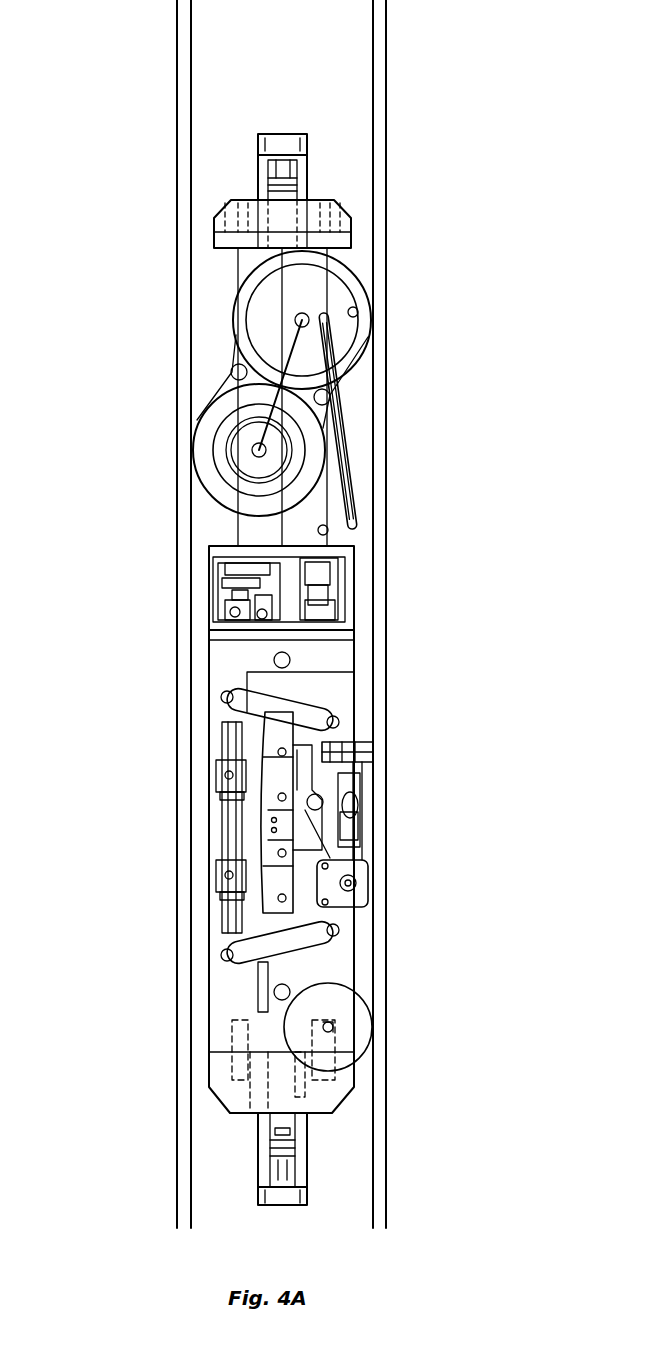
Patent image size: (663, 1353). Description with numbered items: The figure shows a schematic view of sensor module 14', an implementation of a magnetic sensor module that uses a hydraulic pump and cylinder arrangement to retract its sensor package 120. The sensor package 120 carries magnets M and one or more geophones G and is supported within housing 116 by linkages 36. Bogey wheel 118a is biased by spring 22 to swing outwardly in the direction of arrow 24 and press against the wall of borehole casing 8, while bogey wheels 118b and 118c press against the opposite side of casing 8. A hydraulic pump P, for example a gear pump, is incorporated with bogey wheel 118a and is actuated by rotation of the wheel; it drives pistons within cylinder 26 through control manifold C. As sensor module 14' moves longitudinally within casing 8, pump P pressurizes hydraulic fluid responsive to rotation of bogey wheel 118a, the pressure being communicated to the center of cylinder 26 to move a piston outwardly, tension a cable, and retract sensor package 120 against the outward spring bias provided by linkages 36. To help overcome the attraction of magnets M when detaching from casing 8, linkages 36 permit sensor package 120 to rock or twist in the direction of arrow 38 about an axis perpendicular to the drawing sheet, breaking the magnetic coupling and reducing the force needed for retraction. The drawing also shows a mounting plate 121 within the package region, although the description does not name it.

The casing 8 is at (378, 73).
The bogey wheel 118b is at (372, 282).
The bogey wheel 118a is at (253, 433).
The hydraulic pump P is at (285, 451).
The spring 22 is at (360, 396).
The arrow 24 is at (217, 518).
The sensor module 14' is at (212, 829).
The control manifold C is at (295, 575).
The housing 116 is at (353, 622).
The linkages 36 is at (280, 702).
The cylinder 26 is at (217, 812).
The mounting plate 121 is at (270, 881).
The sensor package 120 is at (367, 748).
The geophone G is at (364, 805).
The magnet M is at (373, 777).
The arrow 38 is at (412, 756).
The bogey wheel 118c is at (373, 1027).